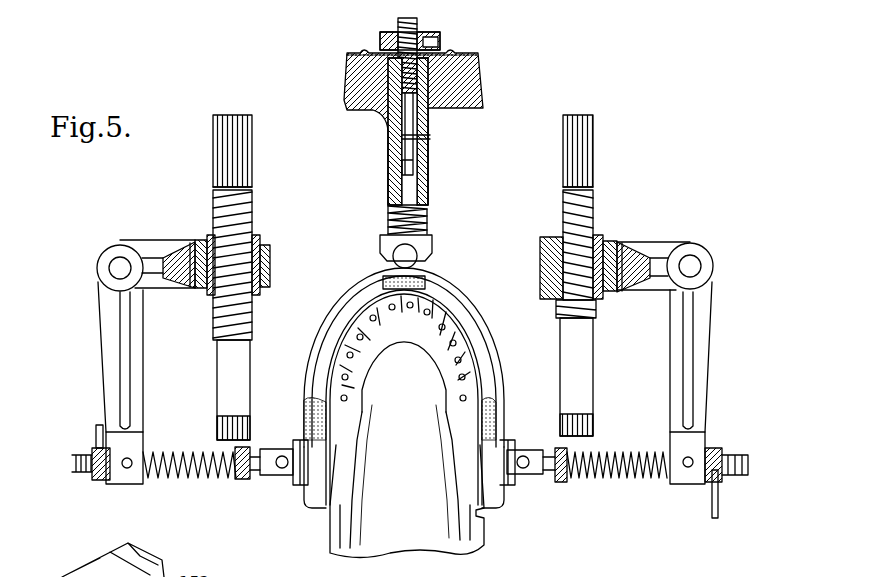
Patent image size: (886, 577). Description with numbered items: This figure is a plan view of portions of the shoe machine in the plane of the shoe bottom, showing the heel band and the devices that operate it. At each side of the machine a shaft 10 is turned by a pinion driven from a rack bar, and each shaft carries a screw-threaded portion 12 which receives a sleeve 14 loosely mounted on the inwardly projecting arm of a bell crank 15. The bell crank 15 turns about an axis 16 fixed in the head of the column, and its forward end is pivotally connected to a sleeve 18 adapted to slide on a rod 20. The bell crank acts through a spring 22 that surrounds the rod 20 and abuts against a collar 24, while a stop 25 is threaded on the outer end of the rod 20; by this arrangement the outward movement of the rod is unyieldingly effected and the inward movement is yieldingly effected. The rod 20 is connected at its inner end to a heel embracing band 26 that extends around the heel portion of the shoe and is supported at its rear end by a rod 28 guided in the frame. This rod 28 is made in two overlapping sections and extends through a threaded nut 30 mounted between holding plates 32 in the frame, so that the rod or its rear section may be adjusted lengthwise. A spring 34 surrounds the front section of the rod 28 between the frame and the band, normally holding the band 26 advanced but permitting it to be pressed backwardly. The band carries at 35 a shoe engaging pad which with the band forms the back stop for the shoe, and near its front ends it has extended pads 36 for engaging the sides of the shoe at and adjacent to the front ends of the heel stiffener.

The shaft 10 is at (593, 190).
The screw-threaded portion 12 is at (593, 218).
The sleeve 14 is at (600, 242).
The bell crank 15 is at (706, 308).
The axis 16 is at (692, 264).
The sleeve 18 is at (706, 478).
The rod 20 is at (748, 462).
The spring 22 is at (658, 472).
The collar 24 is at (561, 482).
The stop 25 is at (720, 448).
The heel embracing band 26 is at (476, 308).
The rod 28 is at (412, 196).
The threaded nut 30 is at (440, 33).
The holding plates 32 is at (470, 58).
The spring 34 is at (428, 220).
The shoe engaging pad 35 is at (425, 266).
The extended pads 36 is at (497, 398).